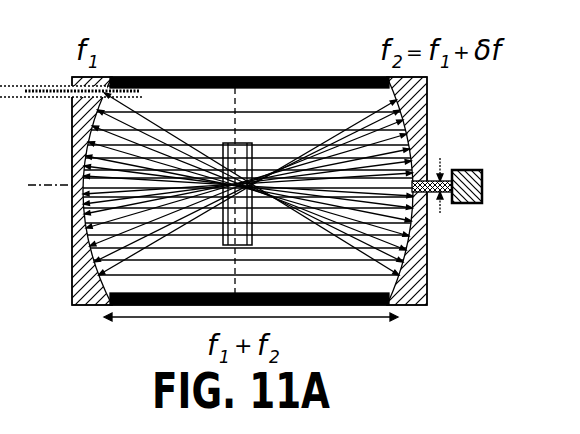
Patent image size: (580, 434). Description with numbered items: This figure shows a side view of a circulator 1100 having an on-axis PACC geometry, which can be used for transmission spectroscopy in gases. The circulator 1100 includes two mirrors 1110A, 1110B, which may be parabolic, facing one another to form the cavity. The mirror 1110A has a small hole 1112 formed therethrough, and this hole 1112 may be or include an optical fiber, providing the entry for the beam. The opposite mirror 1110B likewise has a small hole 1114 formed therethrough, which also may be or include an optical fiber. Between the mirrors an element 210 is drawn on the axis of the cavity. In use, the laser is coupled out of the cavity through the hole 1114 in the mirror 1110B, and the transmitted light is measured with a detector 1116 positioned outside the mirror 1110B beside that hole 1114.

The circulator 1100 is at (205, 50).
The mirror 1110A is at (88, 306).
The mirror 1110B is at (408, 306).
The hole 1112 is at (110, 88).
The hole 1114 is at (433, 195).
The detector 1116 is at (483, 190).
The sample cell / optical element 210 is at (255, 143).